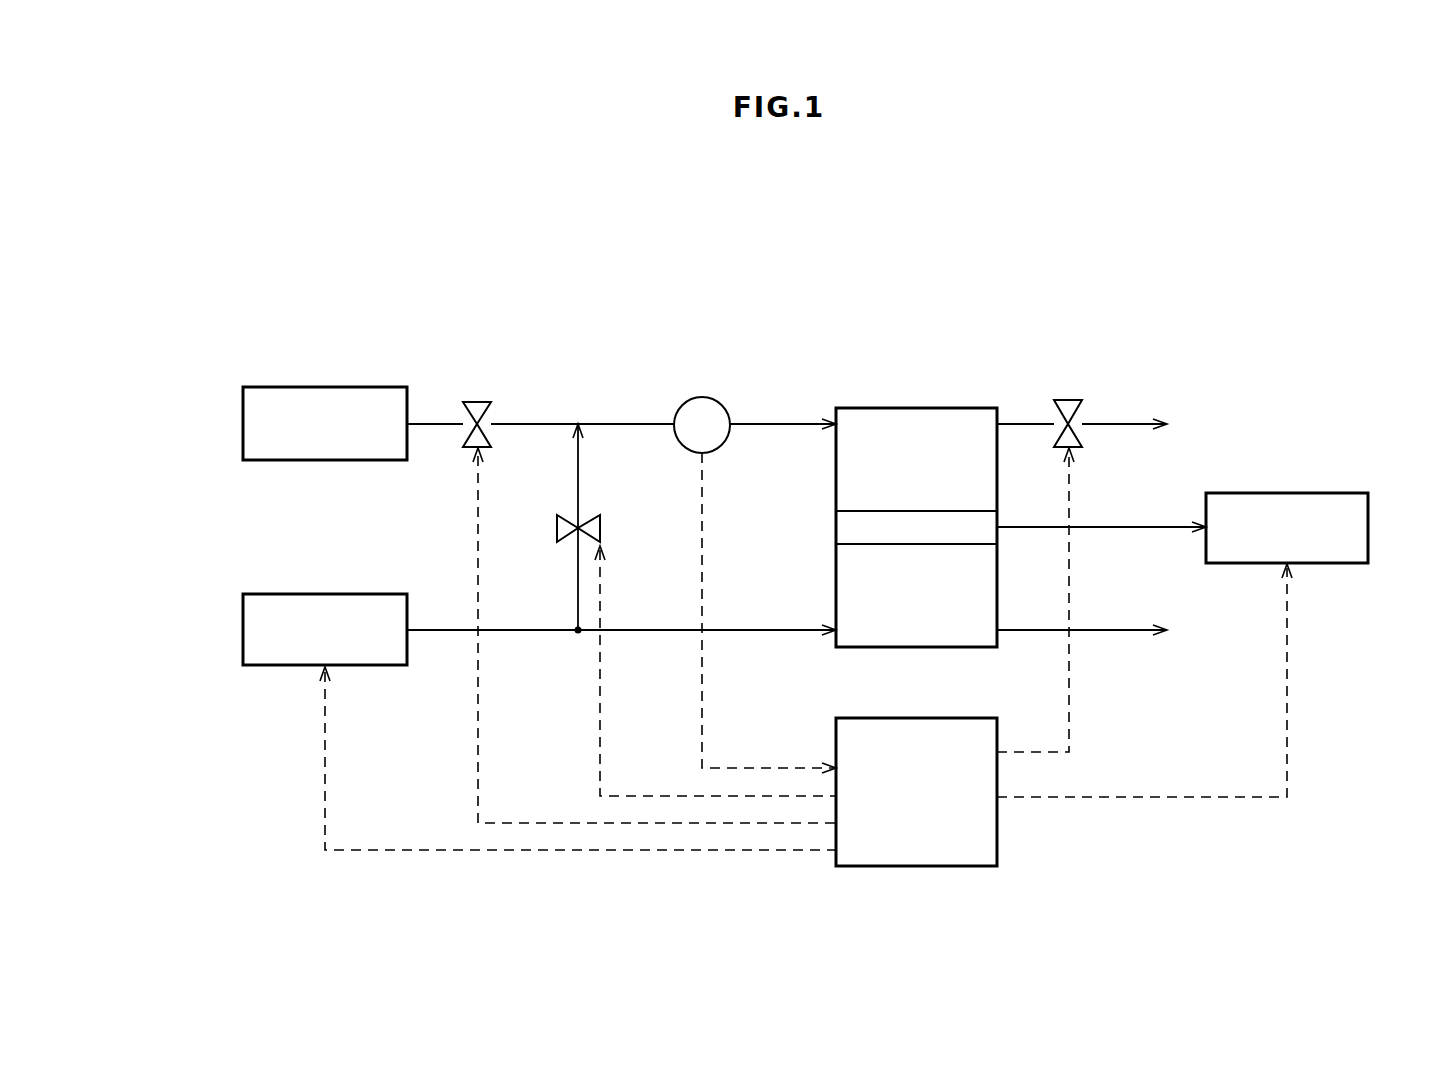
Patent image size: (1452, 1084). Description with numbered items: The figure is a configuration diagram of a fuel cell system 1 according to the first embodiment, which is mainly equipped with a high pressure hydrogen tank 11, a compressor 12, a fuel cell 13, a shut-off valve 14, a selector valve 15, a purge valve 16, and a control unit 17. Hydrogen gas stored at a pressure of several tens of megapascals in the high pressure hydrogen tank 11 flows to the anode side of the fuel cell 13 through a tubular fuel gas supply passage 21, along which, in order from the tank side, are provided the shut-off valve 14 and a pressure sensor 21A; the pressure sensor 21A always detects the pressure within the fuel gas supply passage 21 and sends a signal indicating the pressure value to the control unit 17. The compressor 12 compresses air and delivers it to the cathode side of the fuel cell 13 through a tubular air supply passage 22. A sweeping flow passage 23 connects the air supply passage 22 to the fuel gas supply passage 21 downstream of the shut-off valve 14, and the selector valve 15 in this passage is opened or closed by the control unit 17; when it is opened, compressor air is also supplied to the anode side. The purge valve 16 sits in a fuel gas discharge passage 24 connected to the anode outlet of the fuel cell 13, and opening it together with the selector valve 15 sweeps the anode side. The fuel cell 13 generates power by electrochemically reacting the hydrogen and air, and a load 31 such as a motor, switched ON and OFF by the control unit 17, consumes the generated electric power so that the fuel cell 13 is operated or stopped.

The fuel cell system 1 is at (907, 302).
The high pressure hydrogen tank 11 is at (243, 410).
The compressor 12 is at (243, 617).
The fuel cell 13 is at (919, 398).
The shut-off valve 14 is at (482, 402).
The selector valve 15 is at (556, 528).
The purge valve 16 is at (1069, 400).
The control unit 17 is at (997, 845).
The fuel gas supply passage 21 is at (628, 424).
The pressure sensor 21A is at (702, 397).
The air supply passage 22 is at (645, 640).
The sweeping flow passage 23 is at (578, 483).
The fuel gas discharge passage 24 is at (1025, 422).
The load 31 is at (1368, 528).